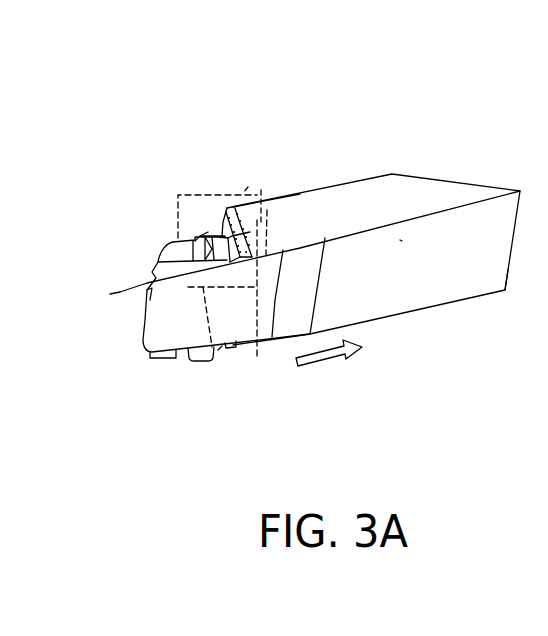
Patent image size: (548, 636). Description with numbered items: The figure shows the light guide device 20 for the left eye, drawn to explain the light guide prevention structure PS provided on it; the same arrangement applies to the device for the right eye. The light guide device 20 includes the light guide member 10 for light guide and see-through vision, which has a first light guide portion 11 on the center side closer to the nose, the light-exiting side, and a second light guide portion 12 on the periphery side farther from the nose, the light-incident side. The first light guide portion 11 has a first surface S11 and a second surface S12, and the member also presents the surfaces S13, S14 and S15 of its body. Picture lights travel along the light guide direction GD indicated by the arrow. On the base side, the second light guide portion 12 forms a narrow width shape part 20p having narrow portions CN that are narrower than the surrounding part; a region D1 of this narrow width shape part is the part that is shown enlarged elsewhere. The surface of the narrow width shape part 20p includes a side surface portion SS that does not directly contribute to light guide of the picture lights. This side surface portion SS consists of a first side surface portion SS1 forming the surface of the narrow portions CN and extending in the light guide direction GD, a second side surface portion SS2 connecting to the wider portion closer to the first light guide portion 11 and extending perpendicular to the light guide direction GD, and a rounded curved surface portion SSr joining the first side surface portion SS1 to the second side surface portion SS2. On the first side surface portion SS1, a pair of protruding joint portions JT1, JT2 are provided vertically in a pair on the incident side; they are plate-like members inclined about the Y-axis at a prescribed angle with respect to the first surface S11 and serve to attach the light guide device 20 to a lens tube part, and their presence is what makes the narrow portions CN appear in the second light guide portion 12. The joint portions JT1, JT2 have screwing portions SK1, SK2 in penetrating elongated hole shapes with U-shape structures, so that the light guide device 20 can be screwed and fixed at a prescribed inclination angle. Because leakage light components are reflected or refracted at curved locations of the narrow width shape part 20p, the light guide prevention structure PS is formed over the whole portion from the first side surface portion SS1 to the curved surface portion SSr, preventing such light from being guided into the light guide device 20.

The light guide member 10 is at (129, 130).
The first light guide portion 11 is at (402, 188).
The second light guide portion 12 is at (283, 222).
The light guide device 20 is at (148, 99).
The narrow width shape part 20p is at (248, 187).
The region D1 is at (262, 190).
The first surface S11 is at (380, 272).
The second surface S12 is at (458, 180).
The third surface S13 is at (337, 183).
The fourth surface S14 is at (275, 333).
The fifth surface S15 is at (203, 241).
The side surface portion SS is at (260, 92).
The first side surface portion SS1 is at (221, 233).
The second side surface portion SS2 is at (223, 232).
The curved surface portion SSr is at (222, 233).
The light guide prevention structure PS is at (204, 231).
The narrow portions CN is at (201, 228).
The joint portion JT1 is at (160, 259).
The joint portion JT2 is at (163, 358).
The screwing portion SK1 is at (155, 281).
The screwing portion SK2 is at (185, 356).
The light guide direction GD is at (327, 367).